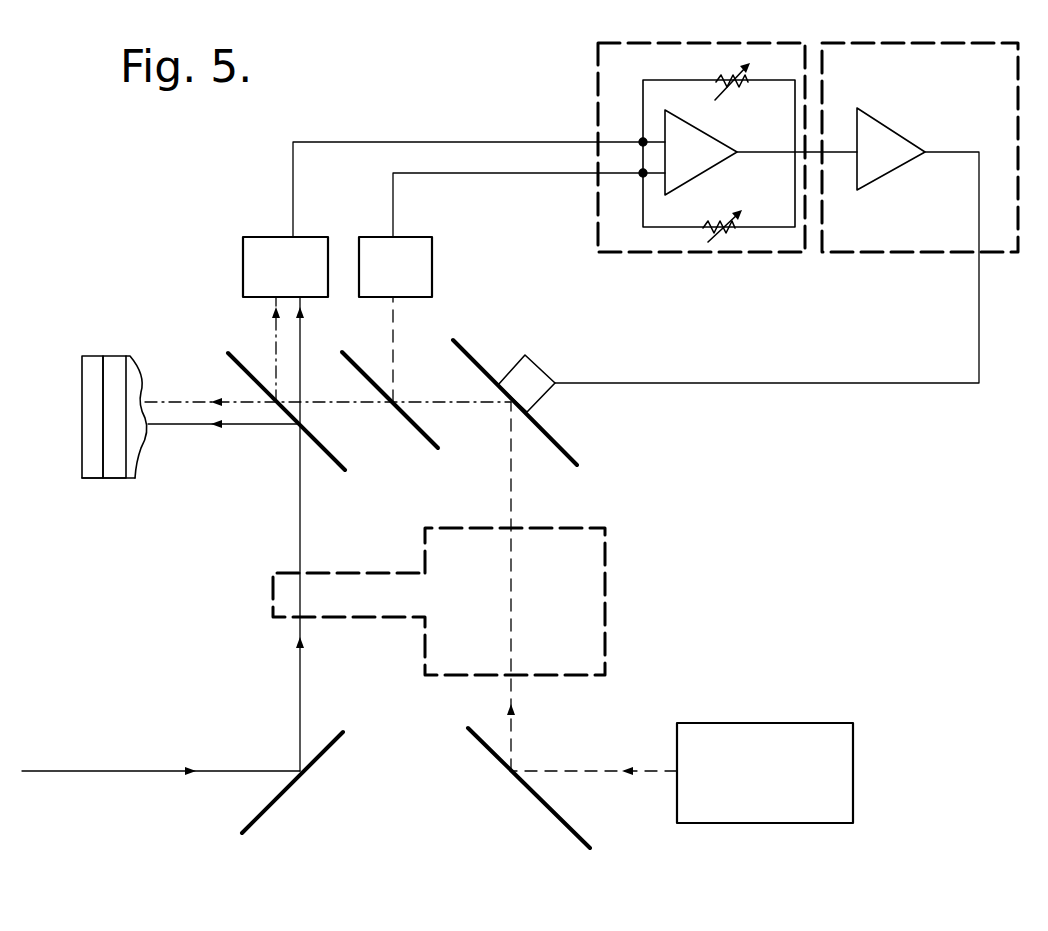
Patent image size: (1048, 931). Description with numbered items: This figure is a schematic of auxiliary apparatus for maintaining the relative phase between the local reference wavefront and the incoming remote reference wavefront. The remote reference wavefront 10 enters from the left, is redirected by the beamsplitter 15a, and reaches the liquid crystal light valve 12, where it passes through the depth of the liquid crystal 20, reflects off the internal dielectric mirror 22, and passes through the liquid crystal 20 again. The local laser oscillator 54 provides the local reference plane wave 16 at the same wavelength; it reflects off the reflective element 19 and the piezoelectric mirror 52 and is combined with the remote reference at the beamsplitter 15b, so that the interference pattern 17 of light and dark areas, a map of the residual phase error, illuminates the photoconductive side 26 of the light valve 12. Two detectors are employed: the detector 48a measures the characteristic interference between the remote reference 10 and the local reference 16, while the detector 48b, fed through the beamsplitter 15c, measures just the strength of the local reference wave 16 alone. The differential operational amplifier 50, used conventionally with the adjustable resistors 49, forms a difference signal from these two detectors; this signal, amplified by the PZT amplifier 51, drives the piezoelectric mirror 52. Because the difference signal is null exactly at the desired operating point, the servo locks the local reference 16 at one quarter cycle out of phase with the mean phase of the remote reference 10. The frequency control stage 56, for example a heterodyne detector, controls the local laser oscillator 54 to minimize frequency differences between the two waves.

The remote reference wavefront 10 is at (301, 314).
The liquid crystal light valve 12 is at (107, 402).
The beamsplitter 15a is at (273, 803).
The beamsplitter 15b is at (346, 468).
The beamsplitter 15c is at (438, 449).
The local reference plane wave 16 is at (276, 322).
The interference pattern 17 is at (140, 465).
The reflective element 19 is at (575, 836).
The liquid crystal 20 is at (85, 363).
The internal dielectric mirror 22 is at (103, 480).
The photoconductive side 26 is at (117, 356).
The detector 48a is at (243, 238).
The detector 48b is at (432, 238).
The adjustable resistors 49 is at (719, 152).
The differential operational amplifier 50 is at (676, 43).
The PZT amplifier 51 is at (861, 43).
The piezoelectric mirror 52 is at (556, 384).
The local laser oscillator 54 is at (707, 723).
The frequency control stage 56 is at (606, 568).